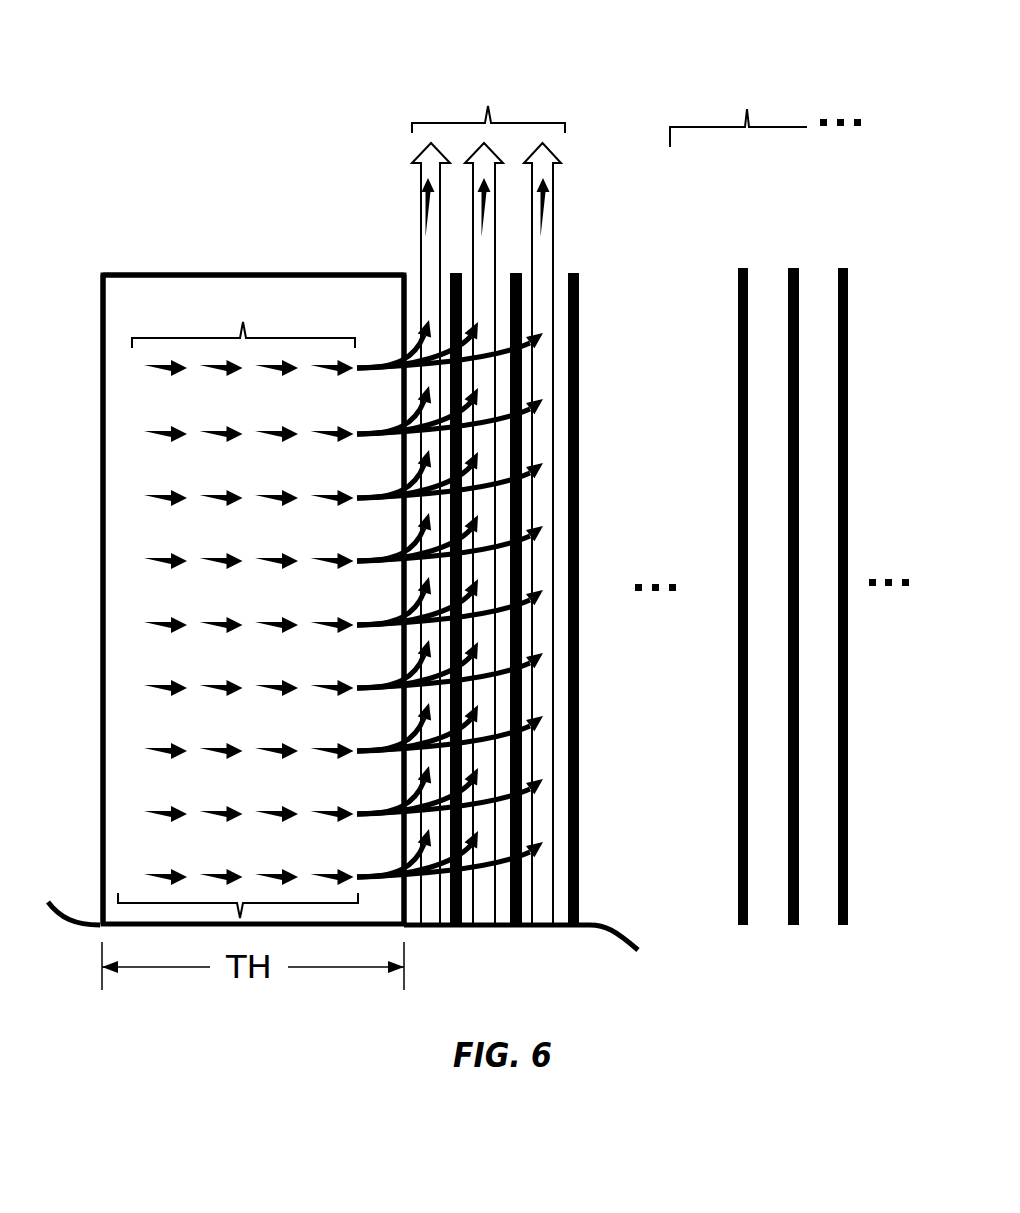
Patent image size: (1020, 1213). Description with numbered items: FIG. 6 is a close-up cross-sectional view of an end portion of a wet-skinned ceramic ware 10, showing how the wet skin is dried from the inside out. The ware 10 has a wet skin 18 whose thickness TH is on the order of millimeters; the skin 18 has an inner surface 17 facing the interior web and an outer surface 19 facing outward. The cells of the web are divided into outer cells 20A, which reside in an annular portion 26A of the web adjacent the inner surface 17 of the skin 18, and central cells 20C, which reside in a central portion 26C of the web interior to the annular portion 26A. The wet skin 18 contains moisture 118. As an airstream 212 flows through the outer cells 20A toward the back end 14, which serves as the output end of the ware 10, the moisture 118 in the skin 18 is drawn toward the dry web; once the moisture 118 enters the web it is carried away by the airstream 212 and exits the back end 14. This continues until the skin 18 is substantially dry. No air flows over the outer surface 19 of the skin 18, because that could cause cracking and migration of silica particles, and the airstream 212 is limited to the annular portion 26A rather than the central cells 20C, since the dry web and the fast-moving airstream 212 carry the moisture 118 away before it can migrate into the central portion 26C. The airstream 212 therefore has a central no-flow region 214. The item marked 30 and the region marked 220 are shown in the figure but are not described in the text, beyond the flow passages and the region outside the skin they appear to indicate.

The skinned ceramic ware 10 is at (182, 95).
The back end 14 is at (188, 272).
The inner surface 17 is at (405, 288).
The skin 18 is at (306, 296).
The outer surface 19 is at (102, 330).
The moisture 118 is at (427, 205).
The airstream 212 is at (488, 491).
The central no-flow region 214 is at (777, 90).
The outer cells 20A is at (446, 288).
The central cells 20C is at (770, 272).
The annular portion 26A is at (576, 213).
The central portion 26C is at (785, 975).
The flow channels 30 is at (518, 455).
The region 220 is at (67, 575).